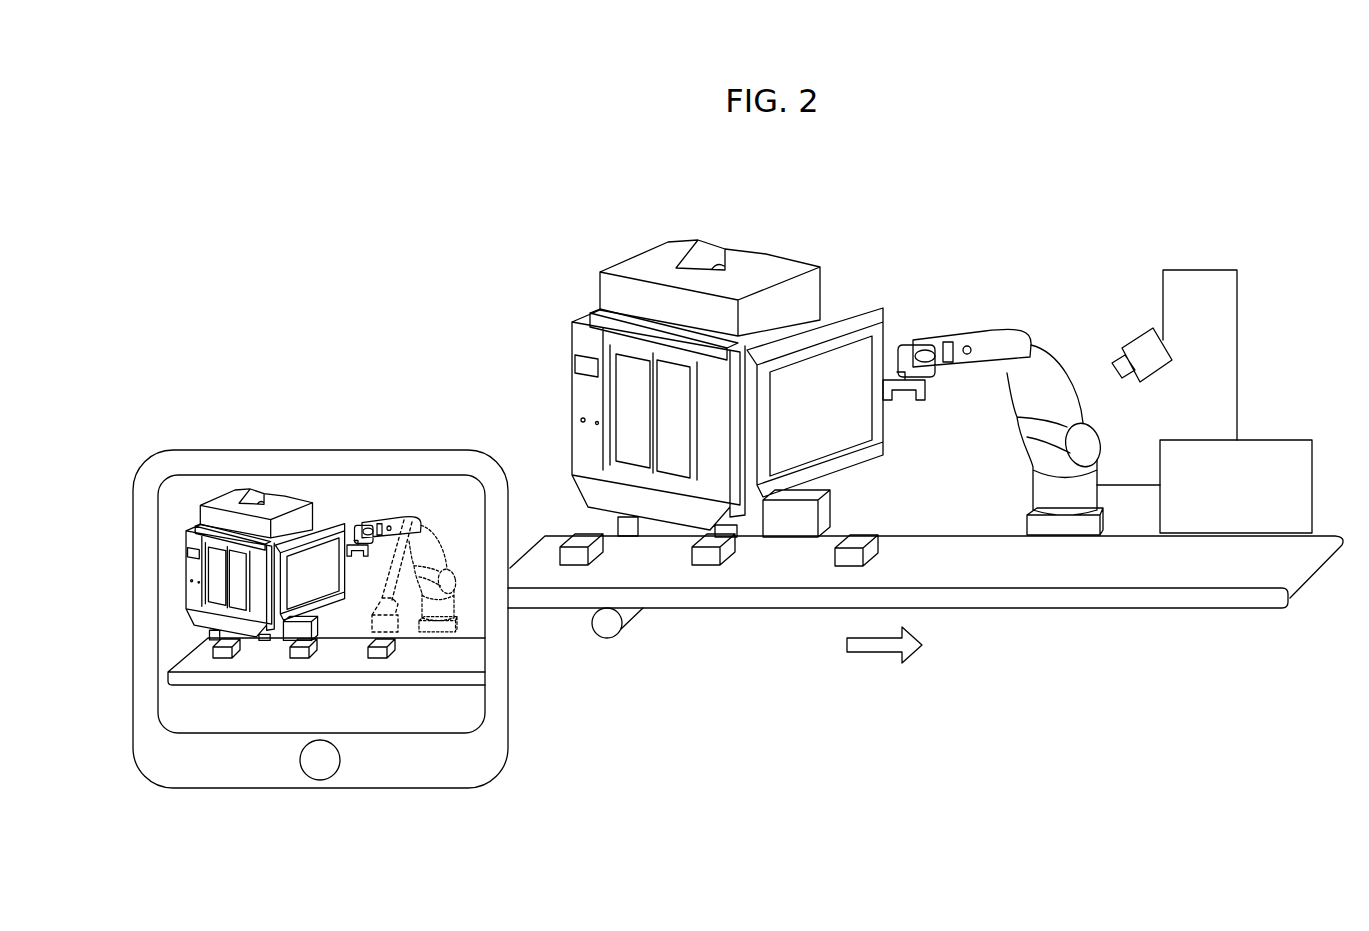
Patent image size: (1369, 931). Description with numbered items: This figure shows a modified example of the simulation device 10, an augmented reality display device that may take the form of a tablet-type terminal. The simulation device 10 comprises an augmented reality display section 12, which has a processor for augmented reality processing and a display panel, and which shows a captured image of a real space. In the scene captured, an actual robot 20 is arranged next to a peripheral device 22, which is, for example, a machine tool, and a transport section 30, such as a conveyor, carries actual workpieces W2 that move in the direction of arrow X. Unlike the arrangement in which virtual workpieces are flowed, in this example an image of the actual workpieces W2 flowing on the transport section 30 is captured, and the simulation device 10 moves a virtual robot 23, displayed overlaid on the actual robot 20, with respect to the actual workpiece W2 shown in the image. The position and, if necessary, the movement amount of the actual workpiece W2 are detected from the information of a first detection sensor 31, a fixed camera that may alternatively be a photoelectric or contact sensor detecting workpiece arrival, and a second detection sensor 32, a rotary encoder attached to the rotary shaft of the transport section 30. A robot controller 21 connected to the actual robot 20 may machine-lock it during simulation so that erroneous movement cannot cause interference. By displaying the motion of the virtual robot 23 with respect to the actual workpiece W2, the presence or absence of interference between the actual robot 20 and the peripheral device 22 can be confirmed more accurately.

The simulation device 10 is at (408, 450).
The augmented reality display section 12 is at (322, 492).
The actual robot 20 is at (970, 330).
The robot controller 21 is at (1275, 440).
The peripheral device 22 is at (790, 257).
The virtual robot 23 is at (387, 570).
The transport section 30 is at (965, 536).
The first detection sensor 31 is at (1140, 340).
The second detection sensor 32 is at (602, 642).
The actual workpiece W2 is at (866, 533).
The arrow X is at (878, 653).